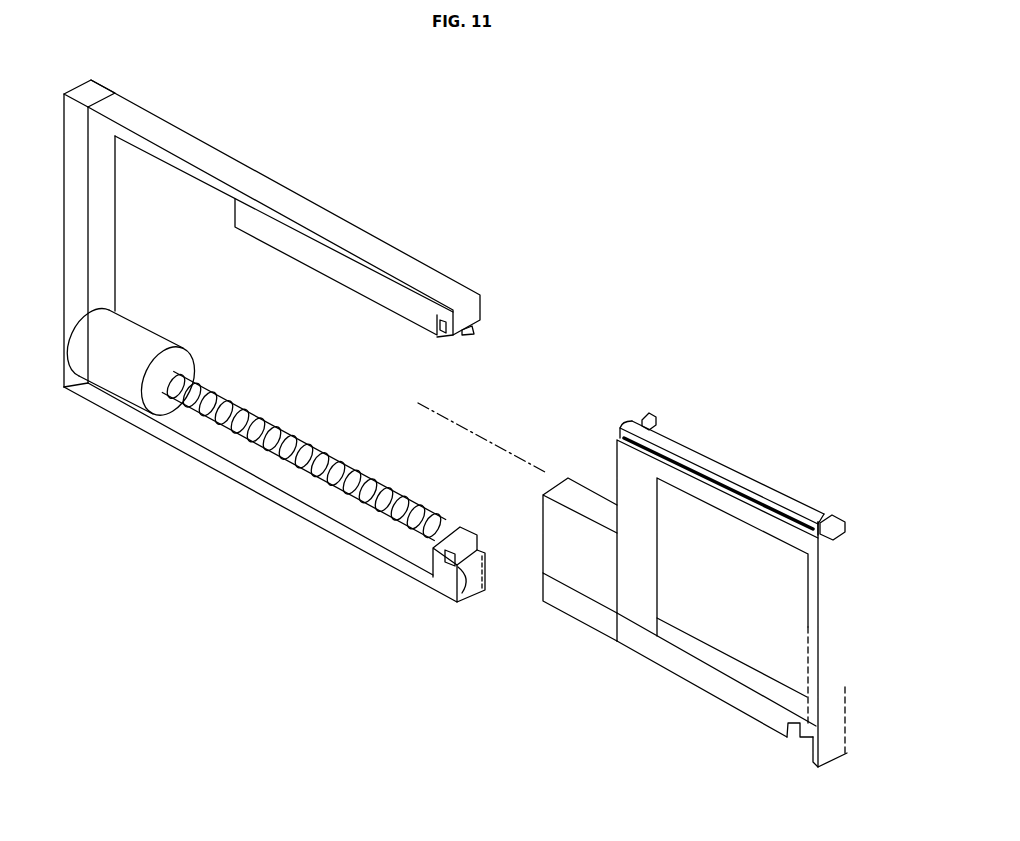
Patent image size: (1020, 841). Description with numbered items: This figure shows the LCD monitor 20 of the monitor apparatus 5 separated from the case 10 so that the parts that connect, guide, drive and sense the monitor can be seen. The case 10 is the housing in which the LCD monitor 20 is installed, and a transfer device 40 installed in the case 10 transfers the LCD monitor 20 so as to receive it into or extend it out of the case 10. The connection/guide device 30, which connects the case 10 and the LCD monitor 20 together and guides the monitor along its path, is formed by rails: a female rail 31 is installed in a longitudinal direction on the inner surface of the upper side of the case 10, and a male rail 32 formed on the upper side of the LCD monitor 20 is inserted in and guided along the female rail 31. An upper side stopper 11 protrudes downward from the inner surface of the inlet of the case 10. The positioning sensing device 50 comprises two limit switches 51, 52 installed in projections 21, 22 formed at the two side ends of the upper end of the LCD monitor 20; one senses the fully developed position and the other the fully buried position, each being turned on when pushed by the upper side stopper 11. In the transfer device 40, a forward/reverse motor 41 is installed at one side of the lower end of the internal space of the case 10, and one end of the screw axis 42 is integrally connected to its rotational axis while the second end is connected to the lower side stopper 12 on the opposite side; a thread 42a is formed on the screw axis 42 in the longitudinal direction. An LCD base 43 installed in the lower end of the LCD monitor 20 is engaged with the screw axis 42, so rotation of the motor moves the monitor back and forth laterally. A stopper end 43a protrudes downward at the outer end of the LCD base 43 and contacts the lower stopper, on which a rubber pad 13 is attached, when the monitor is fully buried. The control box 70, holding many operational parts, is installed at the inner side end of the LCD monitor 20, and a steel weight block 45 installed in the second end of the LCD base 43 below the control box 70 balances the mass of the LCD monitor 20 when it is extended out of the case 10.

The monitor apparatus 5 is at (160, 457).
The case 10 is at (209, 160).
The upper side stopper 11 is at (478, 328).
The lower side stopper 12 is at (433, 548).
The rubber pad 13 is at (447, 603).
The LCD monitor 20 is at (790, 615).
The projection 21 is at (646, 416).
The projection 22 is at (822, 520).
The connection/guide device 30 is at (349, 252).
The female rail 31 is at (356, 282).
The male rail 32 is at (704, 452).
The transfer device 40 is at (208, 372).
The forward/reverse motor 41 is at (131, 330).
The screw axis 42 is at (252, 420).
The thread 42a is at (330, 444).
The LCD base 43 is at (695, 675).
The stopper end 43a is at (811, 755).
The weight block 45 is at (575, 603).
The positioning sensing device 50 is at (775, 440).
The limit switch 51 is at (658, 424).
The limit switch 52 is at (838, 520).
The control box 70 is at (576, 488).